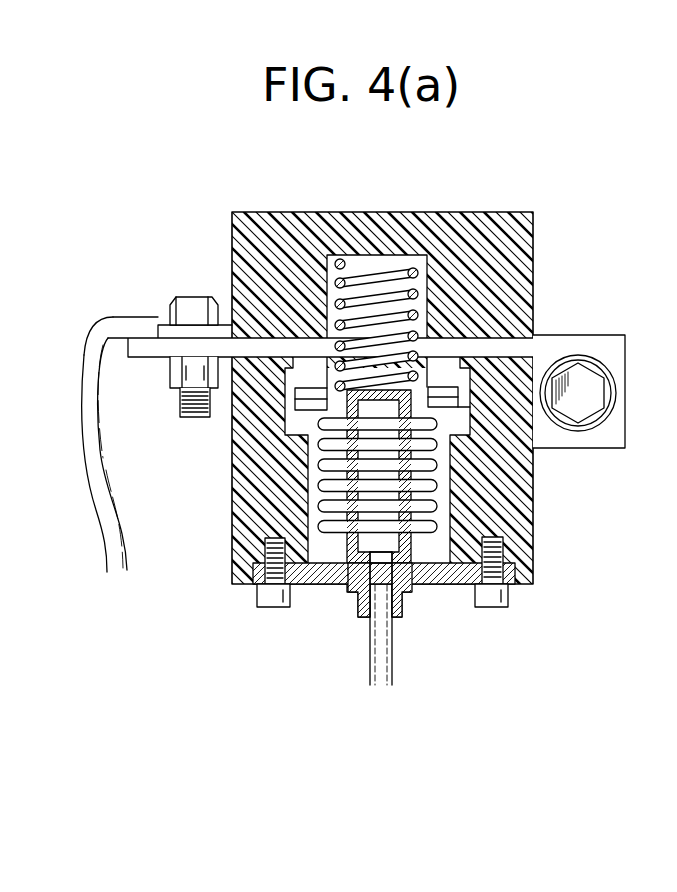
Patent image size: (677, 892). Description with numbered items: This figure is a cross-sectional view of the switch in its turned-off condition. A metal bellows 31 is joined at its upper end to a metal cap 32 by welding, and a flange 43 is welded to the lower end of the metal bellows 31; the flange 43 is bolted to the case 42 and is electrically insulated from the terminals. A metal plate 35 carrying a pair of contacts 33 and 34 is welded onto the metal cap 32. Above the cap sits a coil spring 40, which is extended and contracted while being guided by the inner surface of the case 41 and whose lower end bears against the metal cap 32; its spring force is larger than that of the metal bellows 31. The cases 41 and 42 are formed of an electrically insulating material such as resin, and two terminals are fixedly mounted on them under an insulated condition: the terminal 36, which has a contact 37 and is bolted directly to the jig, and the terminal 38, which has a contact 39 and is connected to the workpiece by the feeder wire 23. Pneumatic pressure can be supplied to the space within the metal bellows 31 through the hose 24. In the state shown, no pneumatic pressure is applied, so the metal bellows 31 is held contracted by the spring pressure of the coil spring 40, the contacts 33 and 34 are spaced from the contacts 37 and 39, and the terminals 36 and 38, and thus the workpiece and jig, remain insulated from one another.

The feeder wire 23 is at (132, 553).
The hose 24 is at (368, 637).
The metal bellows 31 is at (437, 480).
The metal cap 32 is at (342, 422).
The contact 33 is at (452, 391).
The contact 34 is at (298, 393).
The metal plate 35 is at (440, 404).
The terminal 36 is at (580, 344).
The contact 37 is at (449, 361).
The terminal 38 is at (196, 346).
The contact 39 is at (308, 361).
The coil spring 40 is at (382, 272).
The case 41 is at (519, 242).
The case 42 is at (516, 543).
The flange 43 is at (442, 586).